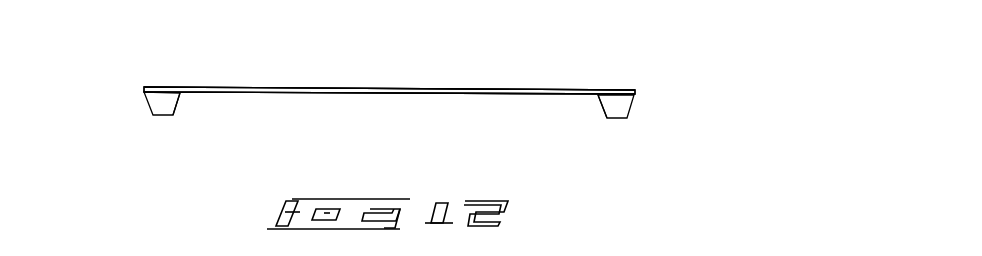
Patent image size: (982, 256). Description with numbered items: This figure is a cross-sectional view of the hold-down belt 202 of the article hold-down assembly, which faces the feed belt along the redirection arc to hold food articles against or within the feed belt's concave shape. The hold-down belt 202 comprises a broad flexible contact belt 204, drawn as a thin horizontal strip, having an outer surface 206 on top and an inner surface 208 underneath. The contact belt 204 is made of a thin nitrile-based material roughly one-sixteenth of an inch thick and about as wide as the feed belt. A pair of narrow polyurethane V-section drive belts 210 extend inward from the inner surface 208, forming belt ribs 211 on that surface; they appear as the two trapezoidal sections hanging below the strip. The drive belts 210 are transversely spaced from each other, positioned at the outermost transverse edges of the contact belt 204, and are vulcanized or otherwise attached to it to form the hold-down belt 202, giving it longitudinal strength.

The hold-down belt 202 is at (595, 43).
The contact belt 204 is at (230, 87).
The outer surface 206 is at (465, 90).
The inner surface 208 is at (343, 93).
The drive belt 210 is at (158, 106).
The belt rib 211 is at (179, 109).